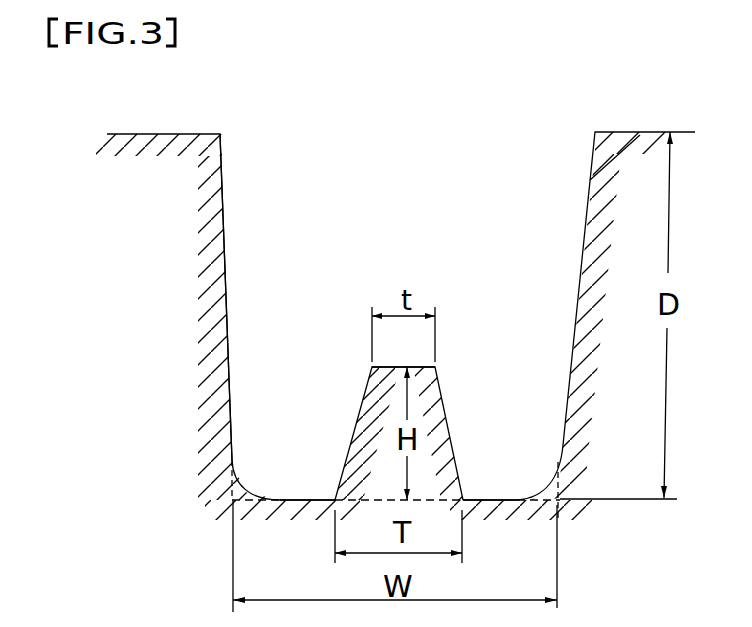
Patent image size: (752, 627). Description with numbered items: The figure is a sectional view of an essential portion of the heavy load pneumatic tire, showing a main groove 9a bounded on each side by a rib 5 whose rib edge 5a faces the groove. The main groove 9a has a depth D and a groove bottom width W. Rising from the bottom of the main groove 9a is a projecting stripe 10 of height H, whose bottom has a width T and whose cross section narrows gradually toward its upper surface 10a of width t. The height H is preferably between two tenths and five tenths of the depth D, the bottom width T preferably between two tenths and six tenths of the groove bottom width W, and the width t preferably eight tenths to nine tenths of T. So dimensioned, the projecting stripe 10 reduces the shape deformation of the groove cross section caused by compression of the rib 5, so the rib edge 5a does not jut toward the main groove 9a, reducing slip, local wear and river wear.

The rib 5 is at (182, 133).
The rib edge 5a is at (240, 145).
The main groove 9a is at (535, 229).
The projecting stripe 10 is at (460, 428).
The upper surface of the projecting stripe 10a is at (421, 361).